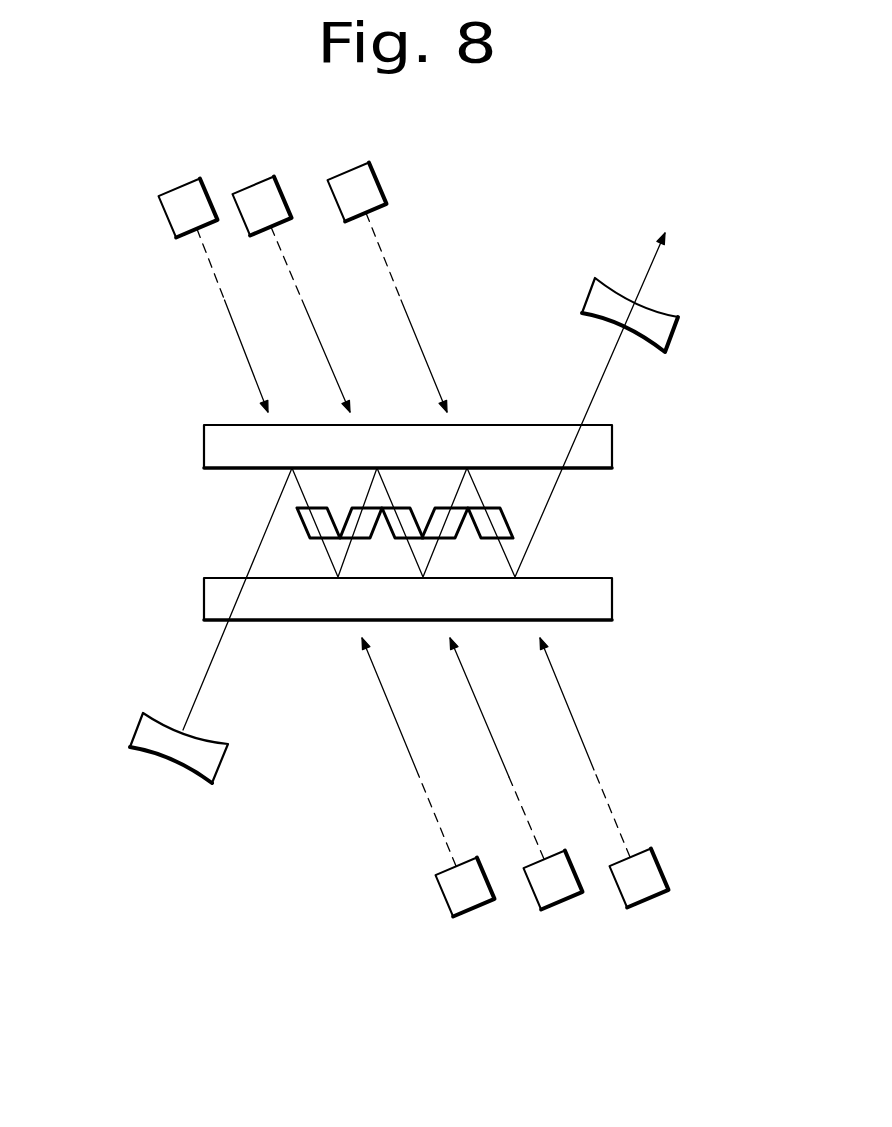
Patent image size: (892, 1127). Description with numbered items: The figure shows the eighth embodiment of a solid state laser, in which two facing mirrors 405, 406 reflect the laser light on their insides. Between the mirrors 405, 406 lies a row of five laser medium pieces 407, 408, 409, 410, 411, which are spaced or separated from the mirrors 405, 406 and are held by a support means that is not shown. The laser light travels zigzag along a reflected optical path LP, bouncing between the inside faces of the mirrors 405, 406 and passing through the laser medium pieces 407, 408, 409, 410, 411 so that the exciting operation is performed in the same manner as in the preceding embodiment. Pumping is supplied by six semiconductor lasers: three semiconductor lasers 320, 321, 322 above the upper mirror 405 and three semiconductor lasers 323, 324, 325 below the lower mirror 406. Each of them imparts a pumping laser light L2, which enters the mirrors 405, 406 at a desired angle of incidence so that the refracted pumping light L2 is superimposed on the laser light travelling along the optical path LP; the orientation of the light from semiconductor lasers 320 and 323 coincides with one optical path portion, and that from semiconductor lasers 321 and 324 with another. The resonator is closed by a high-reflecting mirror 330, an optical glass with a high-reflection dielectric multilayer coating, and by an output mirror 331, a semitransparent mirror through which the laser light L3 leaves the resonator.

The semiconductor laser 320 is at (183, 185).
The semiconductor laser 321 is at (262, 182).
The semiconductor laser 322 is at (358, 165).
The semiconductor laser 323 is at (473, 913).
The semiconductor laser 324 is at (563, 910).
The semiconductor laser 325 is at (653, 900).
The high-reflecting mirror 330 is at (162, 765).
The output mirror 331 is at (677, 315).
The mirror 405 is at (512, 446).
The mirror 406 is at (585, 622).
The laser medium piece 407 is at (307, 538).
The laser medium piece 408 is at (377, 538).
The laser medium piece 409 is at (397, 538).
The laser medium piece 410 is at (433, 507).
The laser medium piece 411 is at (513, 518).
The pumping laser light L2 is at (402, 305).
The laser light L3 is at (652, 268).
The reflected optical path LP is at (218, 552).